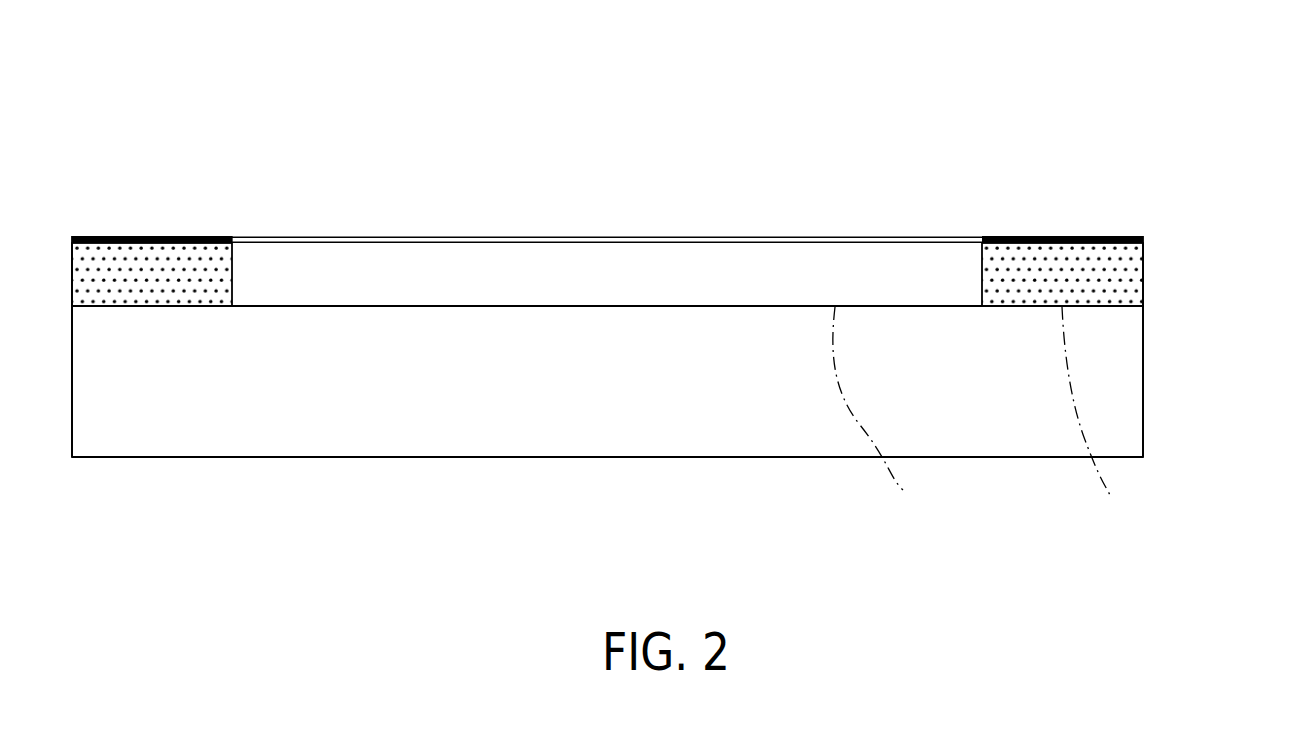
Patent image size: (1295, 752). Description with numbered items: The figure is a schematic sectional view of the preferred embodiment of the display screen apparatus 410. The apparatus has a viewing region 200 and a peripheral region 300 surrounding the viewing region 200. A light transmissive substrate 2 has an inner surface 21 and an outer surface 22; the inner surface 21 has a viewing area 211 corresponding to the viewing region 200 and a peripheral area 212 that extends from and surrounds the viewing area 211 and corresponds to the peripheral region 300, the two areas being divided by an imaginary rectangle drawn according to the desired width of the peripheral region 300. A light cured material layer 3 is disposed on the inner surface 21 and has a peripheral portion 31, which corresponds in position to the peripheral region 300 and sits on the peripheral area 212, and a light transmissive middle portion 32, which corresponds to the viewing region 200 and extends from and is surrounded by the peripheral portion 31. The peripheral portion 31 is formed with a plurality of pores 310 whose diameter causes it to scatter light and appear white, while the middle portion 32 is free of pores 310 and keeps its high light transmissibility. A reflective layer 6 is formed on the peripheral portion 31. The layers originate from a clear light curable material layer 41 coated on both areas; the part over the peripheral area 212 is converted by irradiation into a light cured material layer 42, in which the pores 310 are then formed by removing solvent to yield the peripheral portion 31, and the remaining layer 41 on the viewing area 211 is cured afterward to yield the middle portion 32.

The display screen apparatus 410 is at (885, 48).
The light transmissive substrate 2 is at (1160, 384).
The inner surface 21 is at (892, 306).
The outer surface 22 is at (753, 458).
The viewing area 211 is at (878, 423).
The peripheral area 212 is at (1096, 423).
The light cured material layer 3 is at (1160, 264).
The pores 310 is at (157, 253).
The peripheral region 300 is at (1112, 227).
The light curable material layer 41 is at (718, 274).
The middle portion 32 is at (607, 274).
The light cured material layer 42 is at (1025, 246).
The peripheral portion 31 is at (1062, 239).
The viewing region 200 is at (461, 223).
The reflective layer 6 is at (202, 225).